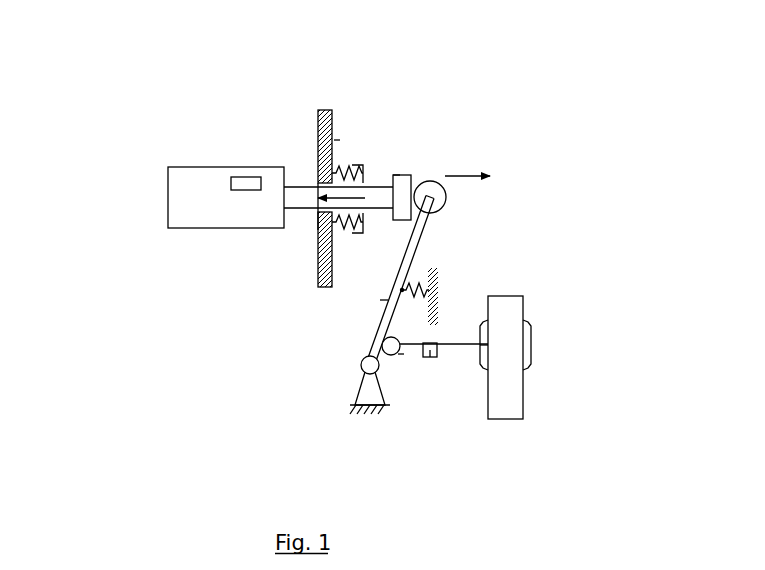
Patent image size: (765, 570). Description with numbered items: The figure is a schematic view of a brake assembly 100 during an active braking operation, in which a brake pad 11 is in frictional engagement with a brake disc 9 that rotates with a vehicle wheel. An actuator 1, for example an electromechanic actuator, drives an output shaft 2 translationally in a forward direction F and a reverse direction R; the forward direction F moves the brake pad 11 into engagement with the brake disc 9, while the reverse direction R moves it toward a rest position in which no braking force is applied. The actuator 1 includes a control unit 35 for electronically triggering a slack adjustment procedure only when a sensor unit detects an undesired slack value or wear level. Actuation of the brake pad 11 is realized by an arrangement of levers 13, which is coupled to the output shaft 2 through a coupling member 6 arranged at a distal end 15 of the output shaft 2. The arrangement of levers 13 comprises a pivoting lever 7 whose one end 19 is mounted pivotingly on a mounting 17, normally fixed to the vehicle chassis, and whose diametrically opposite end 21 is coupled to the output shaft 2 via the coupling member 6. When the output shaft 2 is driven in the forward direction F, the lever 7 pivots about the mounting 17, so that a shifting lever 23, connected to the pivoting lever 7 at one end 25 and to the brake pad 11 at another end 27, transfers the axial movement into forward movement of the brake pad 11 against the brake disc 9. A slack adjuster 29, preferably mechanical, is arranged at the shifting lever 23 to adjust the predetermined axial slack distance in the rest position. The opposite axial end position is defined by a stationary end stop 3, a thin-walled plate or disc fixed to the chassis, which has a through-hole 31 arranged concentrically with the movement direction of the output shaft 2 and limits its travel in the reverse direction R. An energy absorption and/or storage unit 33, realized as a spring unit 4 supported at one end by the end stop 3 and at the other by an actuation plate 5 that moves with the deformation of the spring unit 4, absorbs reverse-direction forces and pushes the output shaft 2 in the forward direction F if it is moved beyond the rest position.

The brake assembly 100 is at (173, 267).
The actuator 1 is at (193, 183).
The control unit 35 is at (247, 180).
The output shaft 2 is at (300, 193).
The end stop 3 is at (325, 127).
The through-hole 31 is at (316, 172).
The energy absorption and/or storage unit 33 is at (345, 136).
The spring unit 4 is at (345, 164).
The actuation plate 5 is at (367, 166).
The coupling member 6 is at (407, 184).
The distal end 15 is at (390, 172).
The forward direction F is at (475, 172).
The end 21 is at (446, 193).
The pivoting lever 7 is at (407, 252).
The arrangement of levers 13 is at (386, 300).
The reverse direction R is at (316, 230).
The shifting lever 23 is at (455, 343).
The brake disc 9 is at (502, 295).
The brake pad 11 is at (489, 350).
The end 27 is at (473, 346).
The slack adjuster 29 is at (430, 358).
The end 25 is at (402, 354).
The end 19 is at (382, 346).
The mounting 17 is at (362, 363).